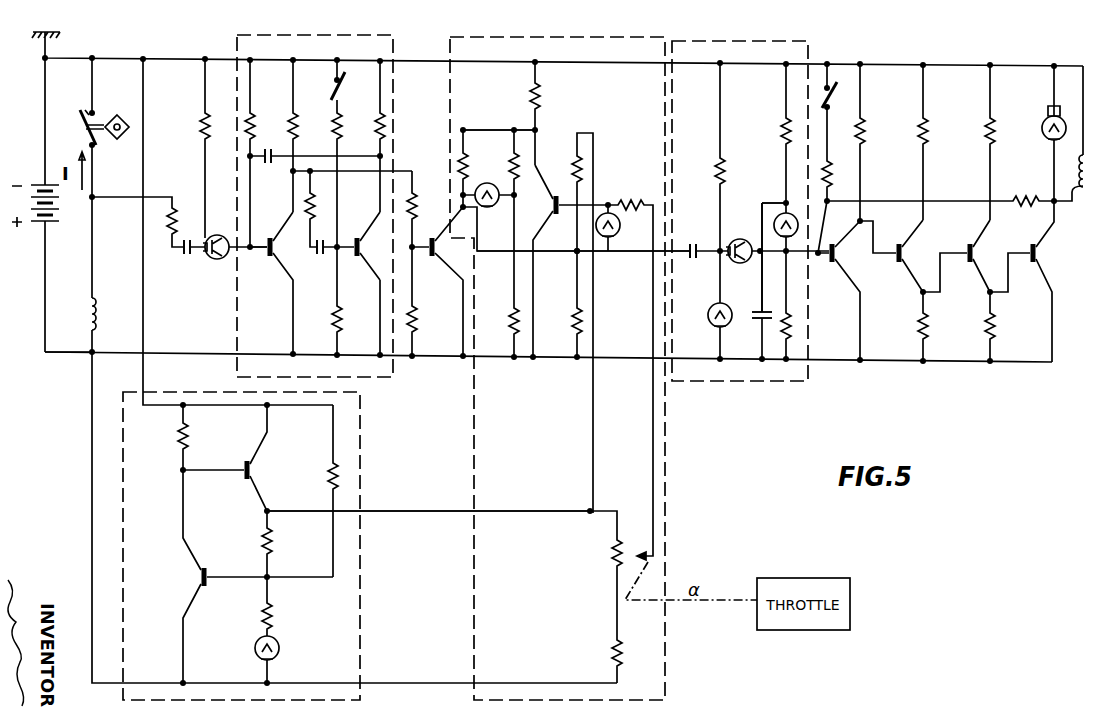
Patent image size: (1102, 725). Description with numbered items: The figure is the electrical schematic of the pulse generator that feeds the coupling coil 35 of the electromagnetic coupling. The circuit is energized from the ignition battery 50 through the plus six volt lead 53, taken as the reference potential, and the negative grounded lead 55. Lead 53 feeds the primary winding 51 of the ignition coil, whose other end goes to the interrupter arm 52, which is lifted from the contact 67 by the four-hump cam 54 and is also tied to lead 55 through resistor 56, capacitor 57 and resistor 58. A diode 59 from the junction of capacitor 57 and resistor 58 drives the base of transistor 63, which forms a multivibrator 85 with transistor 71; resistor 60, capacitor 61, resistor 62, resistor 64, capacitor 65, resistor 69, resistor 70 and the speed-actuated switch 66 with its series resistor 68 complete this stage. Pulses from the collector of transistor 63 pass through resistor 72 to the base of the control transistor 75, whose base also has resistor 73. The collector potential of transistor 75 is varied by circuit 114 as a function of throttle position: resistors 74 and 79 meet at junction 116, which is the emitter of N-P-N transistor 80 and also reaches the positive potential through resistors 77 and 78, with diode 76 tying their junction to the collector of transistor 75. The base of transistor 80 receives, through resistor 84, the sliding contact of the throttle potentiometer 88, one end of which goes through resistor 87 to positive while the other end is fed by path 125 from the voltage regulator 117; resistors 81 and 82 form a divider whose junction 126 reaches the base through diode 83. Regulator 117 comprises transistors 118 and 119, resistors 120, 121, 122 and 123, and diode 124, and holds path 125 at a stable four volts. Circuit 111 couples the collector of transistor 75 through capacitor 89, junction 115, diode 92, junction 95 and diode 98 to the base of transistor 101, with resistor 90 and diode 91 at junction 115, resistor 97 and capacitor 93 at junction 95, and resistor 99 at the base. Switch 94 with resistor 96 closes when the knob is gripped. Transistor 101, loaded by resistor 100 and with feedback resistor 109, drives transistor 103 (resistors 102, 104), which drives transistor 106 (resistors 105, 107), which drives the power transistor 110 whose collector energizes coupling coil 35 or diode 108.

The coupling coil 35 is at (1074, 196).
The battery 50 is at (62, 212).
The primary winding 51 is at (99, 322).
The interrupter arm 52 is at (82, 120).
The lead 53 is at (51, 355).
The cam 54 is at (118, 140).
The lead 55 is at (64, 58).
The resistor 56 is at (176, 210).
The capacitor 57 is at (182, 252).
The resistor 58 is at (200, 128).
The diode 59 is at (211, 258).
The resistor 60 is at (253, 128).
The capacitor 61 is at (276, 165).
The resistor 62 is at (298, 120).
The transistor 63 is at (267, 260).
The resistor 64 is at (315, 212).
The capacitor 65 is at (318, 258).
The switch 66 is at (334, 94).
The contact 67 is at (96, 114).
The resistor 68 is at (344, 128).
The resistor 69 is at (340, 321).
The resistor 70 is at (384, 132).
The transistor 71 is at (357, 238).
The resistor 72 is at (416, 202).
The resistor 73 is at (416, 322).
The resistor 74 is at (458, 166).
The control transistor 75 is at (432, 262).
The diode 76 is at (488, 207).
The resistor 77 is at (512, 169).
The resistor 78 is at (512, 314).
The resistor 79 is at (540, 100).
The N-P-N transistor 80 is at (560, 214).
The resistor 81 is at (575, 166).
The resistor 82 is at (590, 322).
The diode 83 is at (610, 238).
The resistor 84 is at (618, 200).
The multivibrator 85 is at (250, 46).
The resistor 87 is at (606, 655).
The throttle potentiometer 88 is at (610, 548).
The capacitor 89 is at (705, 260).
The resistor 90 is at (718, 174).
The diode 91 is at (711, 325).
The diode 92 is at (740, 238).
The capacitor 93 is at (758, 322).
The switch 94 is at (838, 100).
The junction 95 is at (762, 200).
The resistor 96 is at (834, 166).
The resistor 97 is at (781, 136).
The diode 98 is at (775, 255).
The resistor 99 is at (792, 328).
The resistor 100 is at (864, 124).
The transistor 101 is at (840, 256).
The resistor 102 is at (928, 124).
The transistor 103 is at (895, 244).
The resistor 104 is at (920, 320).
The resistor 105 is at (996, 124).
The transistor 106 is at (966, 244).
The resistor 107 is at (992, 320).
The diode 108 is at (1046, 122).
The resistor 109 is at (1027, 207).
The power transistor 110 is at (1038, 254).
The circuit 111 is at (730, 382).
The circuit 114 is at (452, 48).
The junction 115 is at (705, 242).
The junction 116 is at (490, 128).
The voltage regulator 117 is at (358, 658).
The transistor 118 is at (200, 577).
The transistor 119 is at (250, 470).
The resistor 120 is at (190, 450).
The resistor 121 is at (272, 541).
The resistor 122 is at (271, 619).
The resistor 123 is at (342, 480).
The diode 124 is at (254, 648).
The path 125 is at (386, 514).
The junction 126 is at (575, 254).